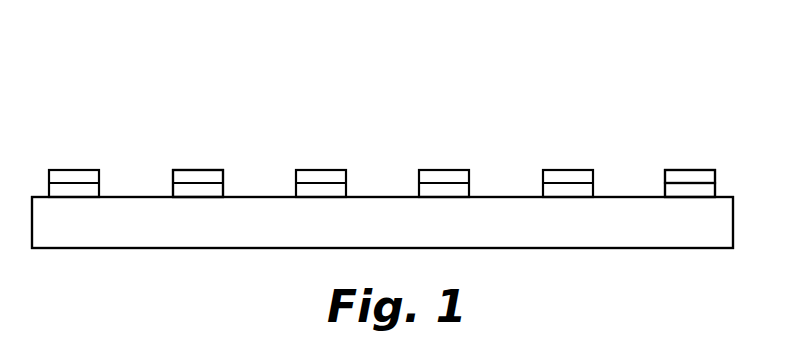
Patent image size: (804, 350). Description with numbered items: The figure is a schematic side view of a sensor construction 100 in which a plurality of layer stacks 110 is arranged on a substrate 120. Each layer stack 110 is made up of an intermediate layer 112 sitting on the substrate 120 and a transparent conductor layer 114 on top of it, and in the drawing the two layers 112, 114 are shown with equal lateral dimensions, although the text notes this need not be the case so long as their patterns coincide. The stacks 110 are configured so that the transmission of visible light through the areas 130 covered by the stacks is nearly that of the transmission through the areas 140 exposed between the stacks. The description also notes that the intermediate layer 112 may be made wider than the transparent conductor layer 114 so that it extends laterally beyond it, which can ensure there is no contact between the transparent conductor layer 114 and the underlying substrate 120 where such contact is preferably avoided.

The sensor construction 100 is at (584, 71).
The layer stack 110 is at (723, 167).
The intermediate layer 112 is at (677, 191).
The transparent conductor layer 114 is at (673, 174).
The substrate 120 is at (700, 235).
The areas covered by the stacks 130 is at (223, 162).
The areas exposed by the stacks 140 is at (296, 162).